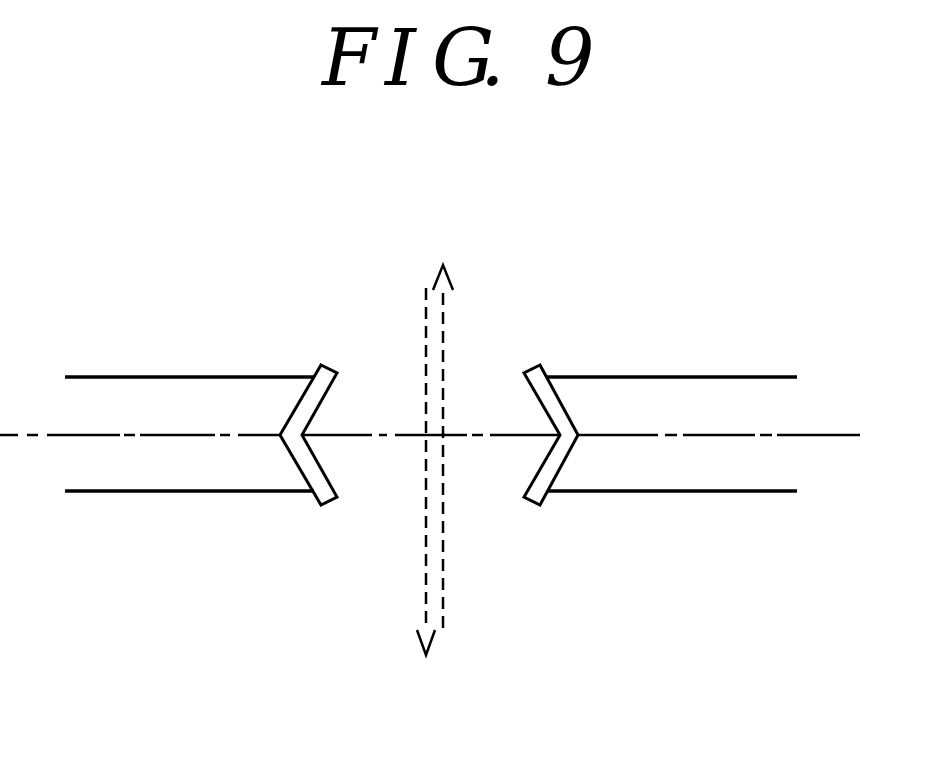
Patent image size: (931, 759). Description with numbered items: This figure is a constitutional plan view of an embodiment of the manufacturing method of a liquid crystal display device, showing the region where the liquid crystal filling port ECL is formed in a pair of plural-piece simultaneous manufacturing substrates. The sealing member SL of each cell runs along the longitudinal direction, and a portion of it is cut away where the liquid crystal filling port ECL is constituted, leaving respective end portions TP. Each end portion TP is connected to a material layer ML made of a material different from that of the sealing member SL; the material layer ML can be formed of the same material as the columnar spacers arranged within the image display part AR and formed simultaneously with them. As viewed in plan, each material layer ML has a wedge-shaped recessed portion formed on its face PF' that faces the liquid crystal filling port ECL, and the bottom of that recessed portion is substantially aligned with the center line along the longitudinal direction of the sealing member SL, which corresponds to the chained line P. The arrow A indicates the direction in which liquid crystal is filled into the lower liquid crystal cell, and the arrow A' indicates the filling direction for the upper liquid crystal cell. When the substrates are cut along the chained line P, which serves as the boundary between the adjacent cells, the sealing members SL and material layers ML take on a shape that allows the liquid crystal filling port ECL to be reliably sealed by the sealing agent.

The chained line P is at (97, 434).
The sealing member SL is at (92, 472).
The end portion TP is at (277, 395).
The liquid crystal filling port ECL is at (402, 405).
The material layer ML is at (297, 445).
The face of the material layer PF' is at (435, 513).
The arrow A' is at (448, 419).
The arrow A is at (424, 497).
The image display part AR is at (644, 435).